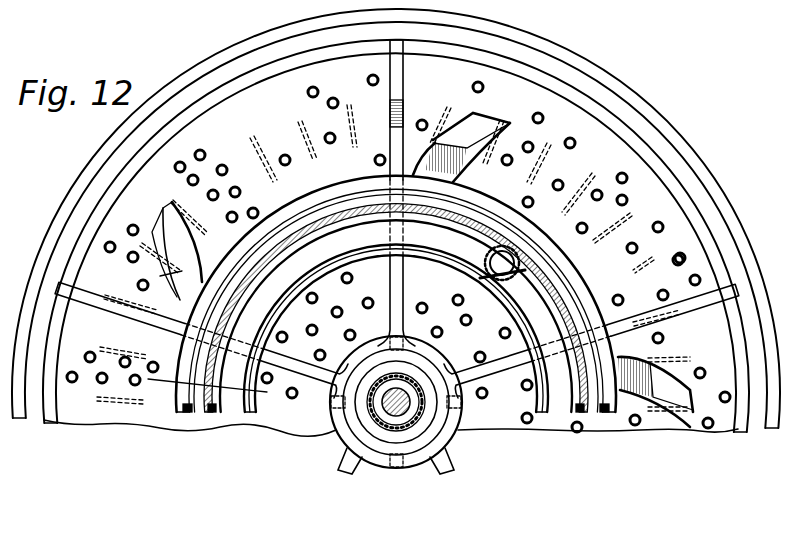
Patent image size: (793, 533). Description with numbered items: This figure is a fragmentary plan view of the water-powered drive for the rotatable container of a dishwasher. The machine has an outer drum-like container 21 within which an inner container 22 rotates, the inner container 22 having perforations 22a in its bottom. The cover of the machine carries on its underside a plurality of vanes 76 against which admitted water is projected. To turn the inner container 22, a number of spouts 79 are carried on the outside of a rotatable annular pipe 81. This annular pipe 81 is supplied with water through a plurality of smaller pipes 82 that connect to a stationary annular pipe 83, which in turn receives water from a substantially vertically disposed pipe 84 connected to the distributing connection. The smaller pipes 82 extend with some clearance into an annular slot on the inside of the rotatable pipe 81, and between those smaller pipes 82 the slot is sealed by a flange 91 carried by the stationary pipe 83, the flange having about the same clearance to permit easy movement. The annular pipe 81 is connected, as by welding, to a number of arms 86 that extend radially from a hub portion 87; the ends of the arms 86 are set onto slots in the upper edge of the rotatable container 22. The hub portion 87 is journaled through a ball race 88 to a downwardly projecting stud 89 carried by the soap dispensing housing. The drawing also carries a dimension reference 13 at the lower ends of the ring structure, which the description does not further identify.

The gap dimension 13 is at (270, 400).
The outer drum-like container 21 is at (84, 183).
The inner container 22 is at (100, 220).
The perforations 22a is at (206, 158).
The vanes 76 is at (282, 123).
The spouts 79 is at (173, 203).
The annular pipe 81 is at (560, 260).
The smaller pipes 82 is at (320, 218).
The stationary annular pipe 83 is at (422, 256).
The vertically disposed pipe 84 is at (492, 281).
The arms 86 is at (405, 92).
The hub portion 87 is at (440, 433).
The ball race 88 is at (408, 382).
The stud 89 is at (412, 408).
The flange 91 is at (292, 230).